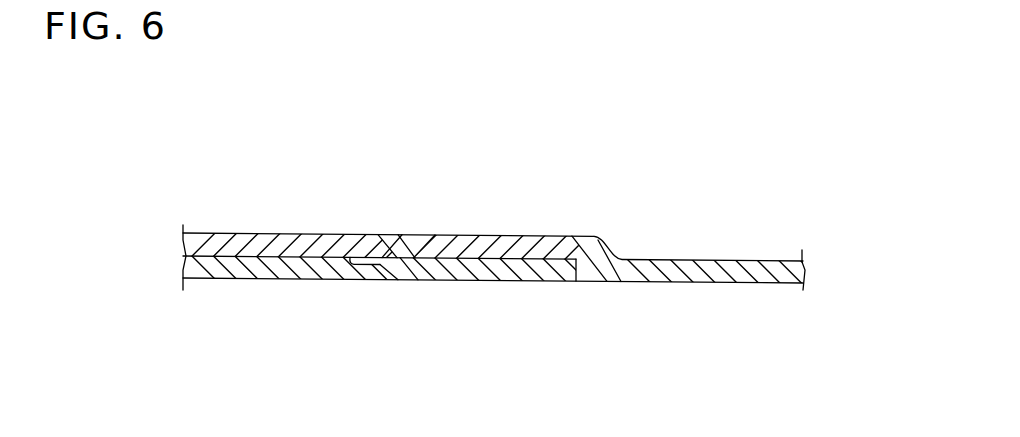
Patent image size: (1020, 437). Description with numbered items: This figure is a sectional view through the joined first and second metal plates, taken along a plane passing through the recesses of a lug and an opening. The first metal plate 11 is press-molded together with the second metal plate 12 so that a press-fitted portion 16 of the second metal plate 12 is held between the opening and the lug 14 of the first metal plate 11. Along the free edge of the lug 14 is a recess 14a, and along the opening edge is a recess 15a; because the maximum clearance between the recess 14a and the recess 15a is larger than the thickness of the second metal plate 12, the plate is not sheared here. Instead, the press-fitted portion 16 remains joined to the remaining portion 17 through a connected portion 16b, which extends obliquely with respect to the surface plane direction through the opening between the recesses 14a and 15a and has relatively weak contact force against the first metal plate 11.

The first metal plate 11 is at (262, 284).
The second metal plate 12 is at (280, 233).
The lug 14 is at (550, 237).
The recess 14a is at (435, 243).
The recess 15a is at (357, 262).
The press-fitted portion 16 is at (500, 265).
The connected edge portion 16b is at (391, 280).
The remaining portion 17 is at (210, 233).